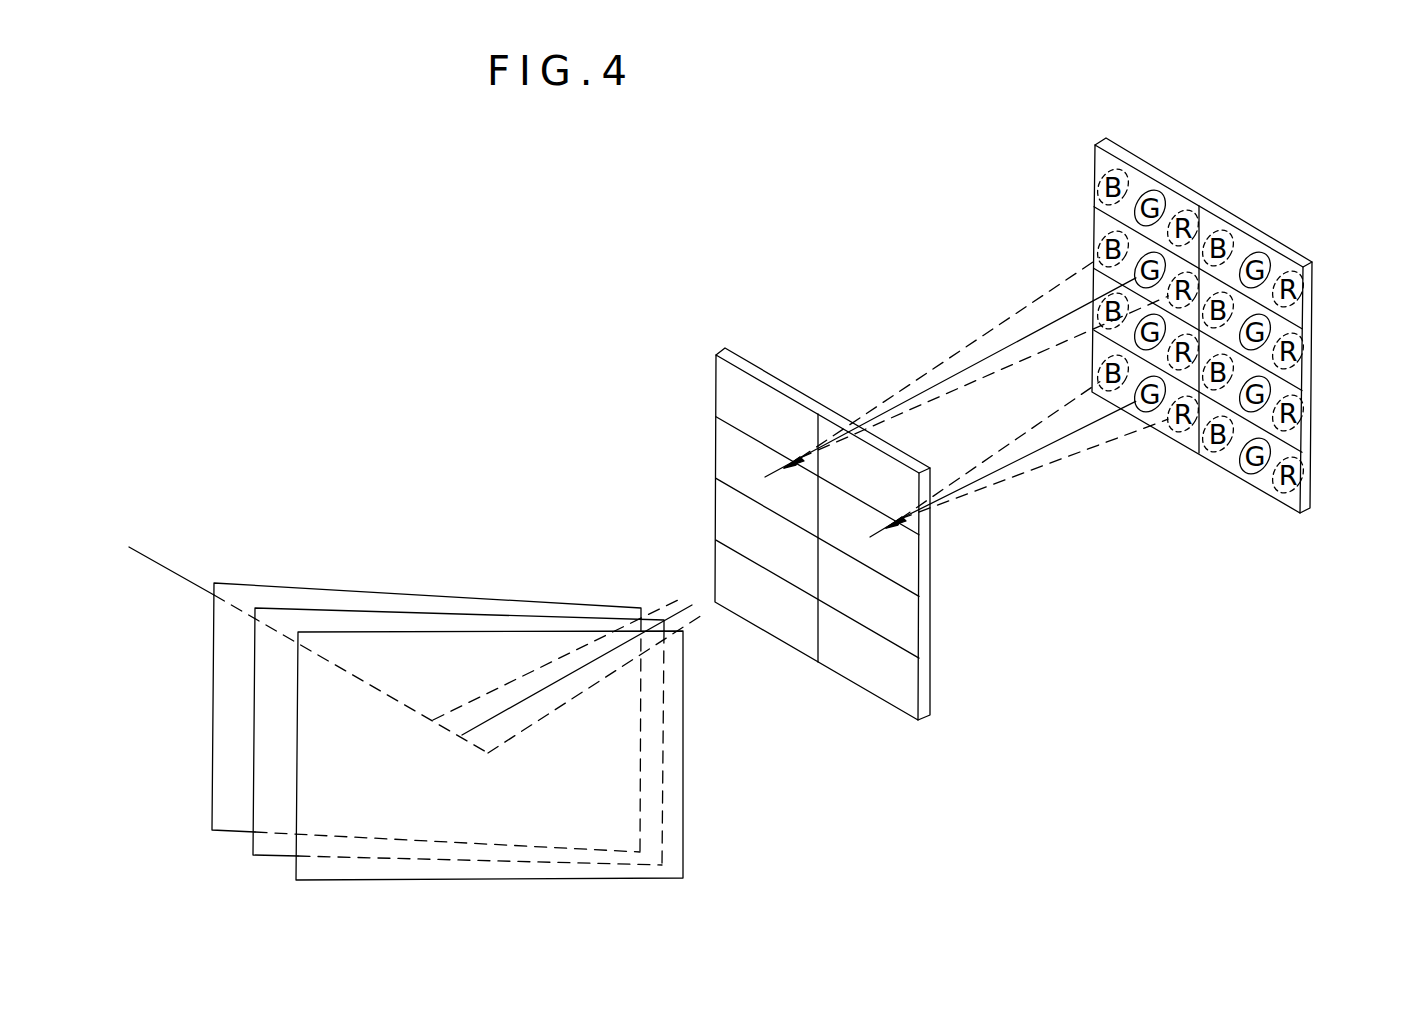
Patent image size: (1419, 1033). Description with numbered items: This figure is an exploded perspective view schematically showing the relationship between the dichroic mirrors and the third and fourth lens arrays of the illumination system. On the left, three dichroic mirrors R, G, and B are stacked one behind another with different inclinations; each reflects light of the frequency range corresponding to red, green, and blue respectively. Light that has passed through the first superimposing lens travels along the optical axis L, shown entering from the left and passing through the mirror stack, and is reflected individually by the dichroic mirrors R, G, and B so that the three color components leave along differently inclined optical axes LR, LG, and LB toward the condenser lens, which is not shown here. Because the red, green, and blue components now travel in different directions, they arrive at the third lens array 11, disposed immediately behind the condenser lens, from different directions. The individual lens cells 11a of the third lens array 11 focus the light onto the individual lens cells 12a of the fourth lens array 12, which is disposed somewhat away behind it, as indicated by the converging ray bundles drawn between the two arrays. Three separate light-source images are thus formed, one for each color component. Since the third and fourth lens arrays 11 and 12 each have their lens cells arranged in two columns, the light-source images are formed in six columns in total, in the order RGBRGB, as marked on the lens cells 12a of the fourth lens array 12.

The third lens array 11 is at (879, 493).
The lens cell 11a is at (910, 633).
The fourth lens array 12 is at (1212, 301).
The lens cell 12a is at (1293, 435).
The optical axis L is at (153, 560).
The dichroic mirror R is at (235, 583).
The dichroic mirror G is at (272, 609).
The dichroic mirror B is at (330, 632).
The optical axis LR is at (673, 600).
The optical axis LG is at (688, 600).
The optical axis LB is at (703, 616).